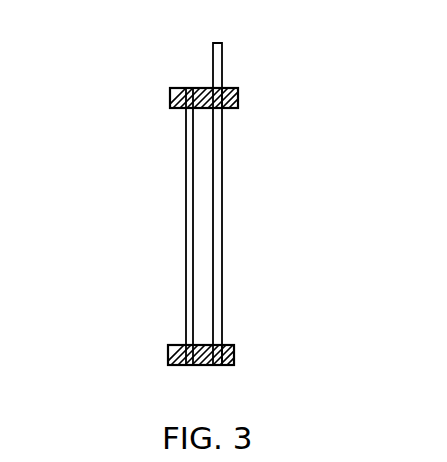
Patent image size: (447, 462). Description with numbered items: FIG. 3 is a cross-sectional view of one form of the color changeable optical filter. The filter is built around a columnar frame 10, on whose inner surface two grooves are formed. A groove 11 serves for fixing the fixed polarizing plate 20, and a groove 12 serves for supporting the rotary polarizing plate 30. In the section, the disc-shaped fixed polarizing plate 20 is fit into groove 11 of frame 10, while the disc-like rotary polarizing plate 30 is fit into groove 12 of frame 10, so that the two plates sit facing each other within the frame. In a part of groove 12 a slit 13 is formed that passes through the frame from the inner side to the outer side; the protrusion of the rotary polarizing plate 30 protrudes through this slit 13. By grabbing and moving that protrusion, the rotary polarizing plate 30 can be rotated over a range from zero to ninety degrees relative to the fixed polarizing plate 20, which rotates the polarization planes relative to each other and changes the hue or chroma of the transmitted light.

The frame 10 is at (188, 92).
The groove 11 is at (184, 109).
The groove 12 is at (225, 347).
The slit 13 is at (223, 80).
The fixed polarizing plate 20 is at (186, 185).
The rotary polarizing plate 30 is at (223, 183).